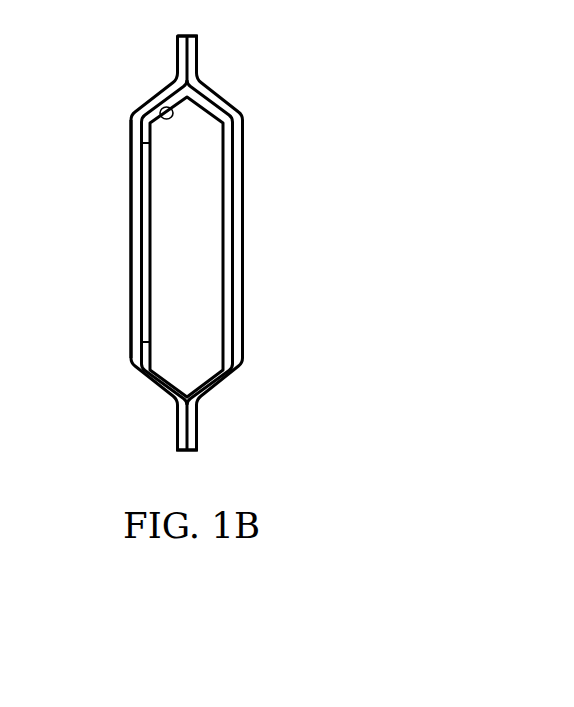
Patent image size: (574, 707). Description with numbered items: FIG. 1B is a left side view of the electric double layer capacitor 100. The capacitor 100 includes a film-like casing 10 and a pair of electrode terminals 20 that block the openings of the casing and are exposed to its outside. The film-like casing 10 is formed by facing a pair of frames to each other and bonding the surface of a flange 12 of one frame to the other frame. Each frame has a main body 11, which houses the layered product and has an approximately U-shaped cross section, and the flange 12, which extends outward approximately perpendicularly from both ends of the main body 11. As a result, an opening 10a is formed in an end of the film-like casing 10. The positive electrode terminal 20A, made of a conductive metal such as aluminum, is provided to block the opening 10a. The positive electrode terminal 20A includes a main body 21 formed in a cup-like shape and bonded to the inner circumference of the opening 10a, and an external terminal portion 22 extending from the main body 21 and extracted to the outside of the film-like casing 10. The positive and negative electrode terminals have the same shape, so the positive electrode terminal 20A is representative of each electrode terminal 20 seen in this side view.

The capacitor 100 is at (317, 128).
The film-like casing 10 is at (243, 103).
The opening 10a is at (162, 108).
The main body 11 is at (131, 162).
The flange 12 is at (178, 53).
The positive electrode terminal 20A is at (154, 379).
The electrode terminal 20 is at (210, 243).
The main body 21 is at (193, 280).
The external terminal portion 22 is at (143, 256).